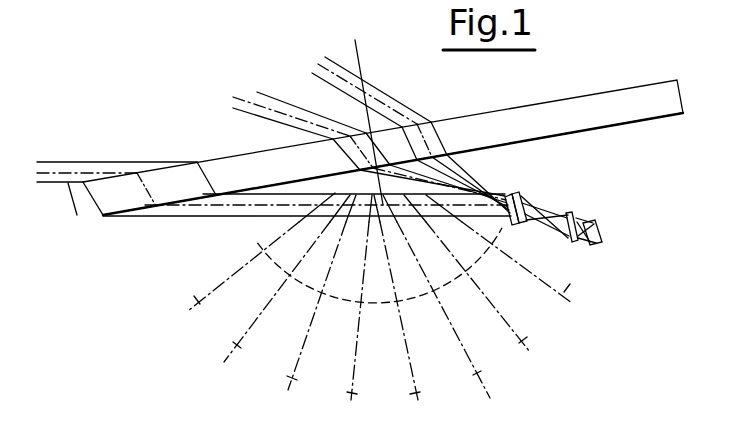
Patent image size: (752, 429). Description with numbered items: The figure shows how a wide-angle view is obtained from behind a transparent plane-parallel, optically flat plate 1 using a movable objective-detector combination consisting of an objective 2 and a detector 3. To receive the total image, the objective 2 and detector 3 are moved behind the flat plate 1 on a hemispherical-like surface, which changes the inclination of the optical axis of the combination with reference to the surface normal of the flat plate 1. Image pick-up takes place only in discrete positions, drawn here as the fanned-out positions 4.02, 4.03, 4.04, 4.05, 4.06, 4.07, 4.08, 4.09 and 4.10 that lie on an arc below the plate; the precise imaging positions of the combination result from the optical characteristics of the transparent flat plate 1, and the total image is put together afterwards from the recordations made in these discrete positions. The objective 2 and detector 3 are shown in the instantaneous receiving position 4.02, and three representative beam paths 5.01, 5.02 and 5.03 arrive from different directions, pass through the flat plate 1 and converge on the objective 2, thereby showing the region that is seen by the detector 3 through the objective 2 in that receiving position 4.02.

The transparent plane-parallel plate 1 is at (560, 108).
The objective 2 is at (573, 210).
The detector 3 is at (602, 222).
The receiving position 4.02 is at (594, 227).
The discrete imaging position 4.03 is at (570, 290).
The discrete imaging position 4.04 is at (527, 342).
The discrete imaging position 4.05 is at (481, 377).
The discrete imaging position 4.06 is at (418, 396).
The discrete imaging position 4.07 is at (352, 396).
The discrete imaging position 4.08 is at (290, 382).
The discrete imaging position 4.09 is at (235, 348).
The discrete imaging position 4.10 is at (194, 302).
The representative beam path 5.01 is at (50, 167).
The representative beam path 5.02 is at (257, 97).
The representative beam path 5.03 is at (377, 93).